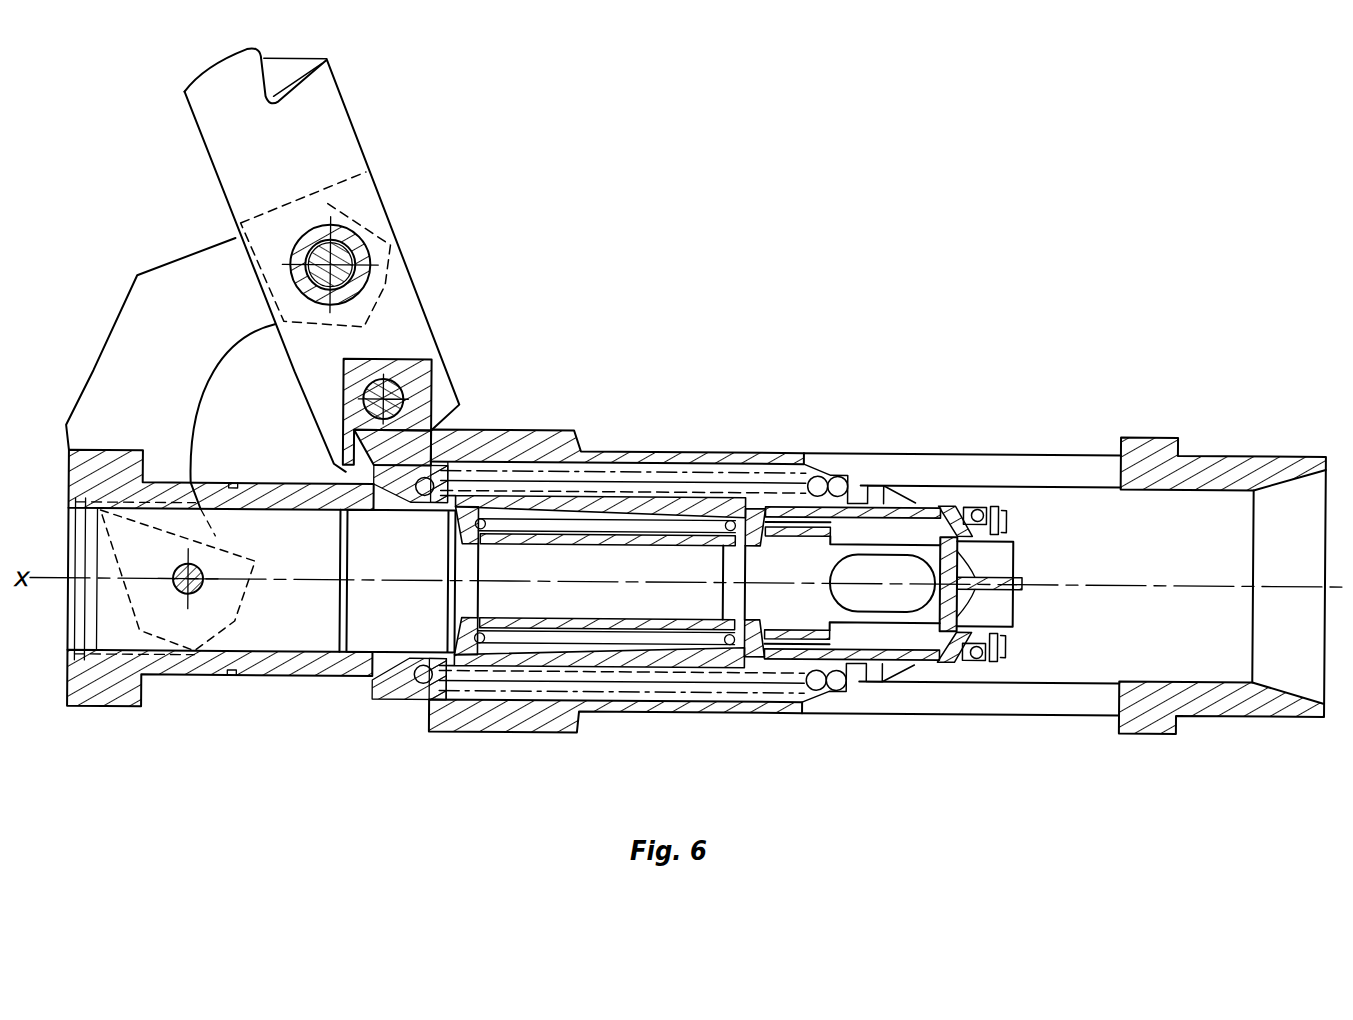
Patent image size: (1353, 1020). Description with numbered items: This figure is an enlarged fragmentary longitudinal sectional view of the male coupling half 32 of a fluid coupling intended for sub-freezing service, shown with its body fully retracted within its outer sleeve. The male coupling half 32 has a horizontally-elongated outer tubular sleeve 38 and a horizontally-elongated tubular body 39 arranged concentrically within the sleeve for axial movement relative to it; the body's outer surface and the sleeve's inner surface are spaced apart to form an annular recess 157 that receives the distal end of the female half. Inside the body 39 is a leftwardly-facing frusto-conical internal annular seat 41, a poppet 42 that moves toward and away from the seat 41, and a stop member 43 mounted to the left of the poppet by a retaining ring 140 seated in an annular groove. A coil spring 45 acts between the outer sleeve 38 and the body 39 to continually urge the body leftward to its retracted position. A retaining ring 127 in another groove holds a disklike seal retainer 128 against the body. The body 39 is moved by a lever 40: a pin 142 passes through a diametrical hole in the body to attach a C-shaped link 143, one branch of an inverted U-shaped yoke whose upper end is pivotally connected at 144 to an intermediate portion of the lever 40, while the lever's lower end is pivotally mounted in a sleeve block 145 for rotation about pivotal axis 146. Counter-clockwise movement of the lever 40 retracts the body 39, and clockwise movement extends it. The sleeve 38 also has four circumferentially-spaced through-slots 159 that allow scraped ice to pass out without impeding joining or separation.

The male coupling half 32 is at (788, 266).
The outer tubular sleeve 38 is at (650, 443).
The tubular body 39 is at (215, 767).
The lever 40 is at (330, 113).
The internal annular seat 41 is at (885, 491).
The poppet 42 is at (903, 631).
The stop member 43 is at (625, 558).
The coil spring 45 is at (728, 680).
The retaining ring 127 is at (1020, 523).
The seal retainer 128 is at (1010, 652).
The retaining ring 140 is at (415, 606).
The pin 142 is at (255, 615).
The C-shaped link 143 is at (104, 322).
The pivotal connection 144 is at (358, 251).
The sleeve block 145 is at (425, 354).
The pivotal axis 146 is at (395, 393).
The annular recess 157 is at (937, 491).
The through-slots 159 is at (1040, 470).